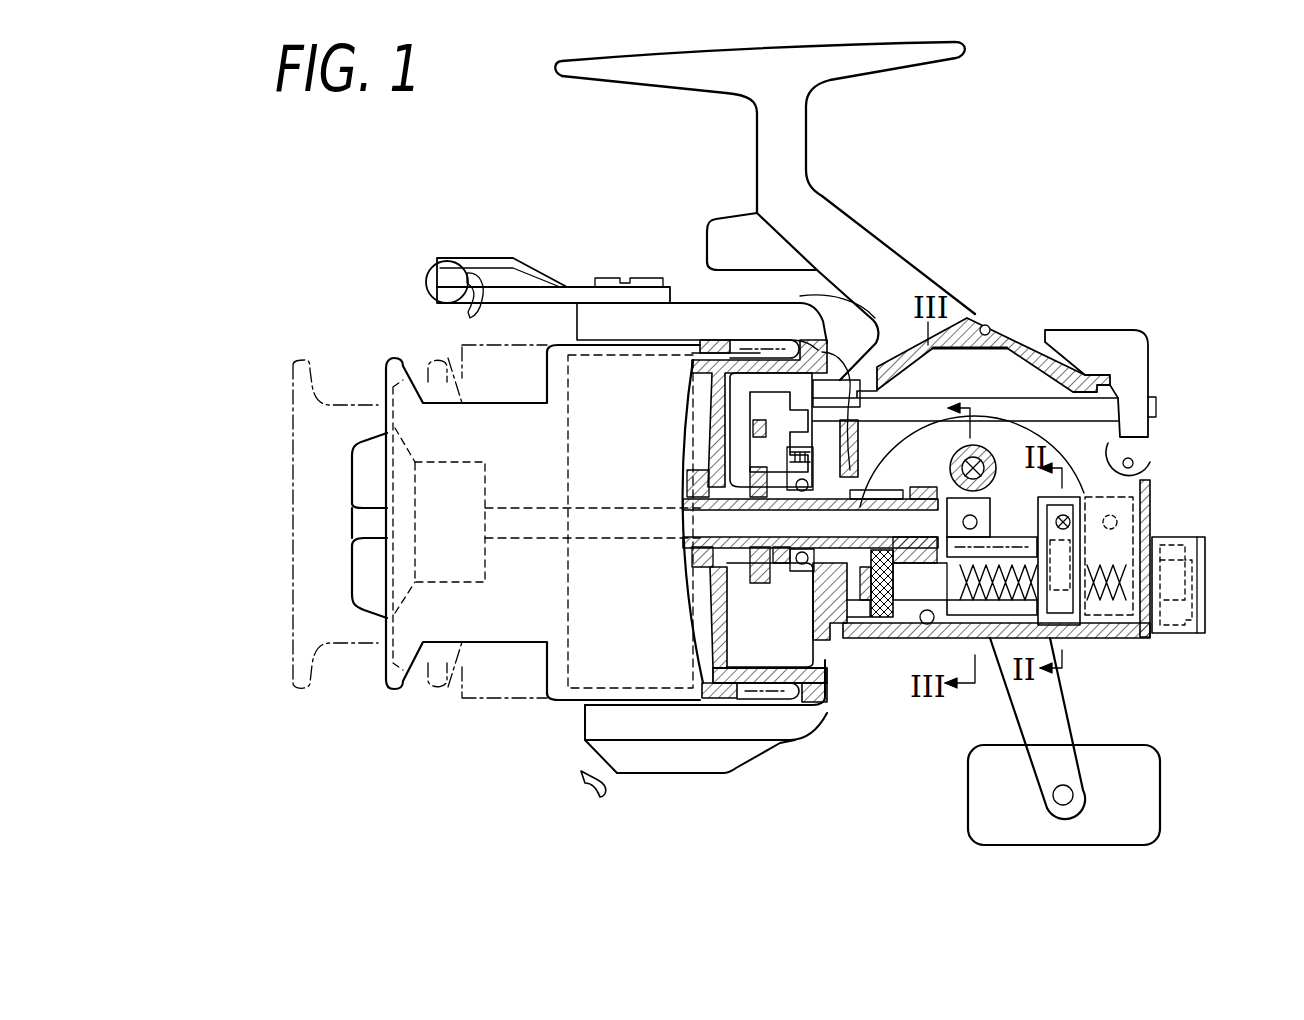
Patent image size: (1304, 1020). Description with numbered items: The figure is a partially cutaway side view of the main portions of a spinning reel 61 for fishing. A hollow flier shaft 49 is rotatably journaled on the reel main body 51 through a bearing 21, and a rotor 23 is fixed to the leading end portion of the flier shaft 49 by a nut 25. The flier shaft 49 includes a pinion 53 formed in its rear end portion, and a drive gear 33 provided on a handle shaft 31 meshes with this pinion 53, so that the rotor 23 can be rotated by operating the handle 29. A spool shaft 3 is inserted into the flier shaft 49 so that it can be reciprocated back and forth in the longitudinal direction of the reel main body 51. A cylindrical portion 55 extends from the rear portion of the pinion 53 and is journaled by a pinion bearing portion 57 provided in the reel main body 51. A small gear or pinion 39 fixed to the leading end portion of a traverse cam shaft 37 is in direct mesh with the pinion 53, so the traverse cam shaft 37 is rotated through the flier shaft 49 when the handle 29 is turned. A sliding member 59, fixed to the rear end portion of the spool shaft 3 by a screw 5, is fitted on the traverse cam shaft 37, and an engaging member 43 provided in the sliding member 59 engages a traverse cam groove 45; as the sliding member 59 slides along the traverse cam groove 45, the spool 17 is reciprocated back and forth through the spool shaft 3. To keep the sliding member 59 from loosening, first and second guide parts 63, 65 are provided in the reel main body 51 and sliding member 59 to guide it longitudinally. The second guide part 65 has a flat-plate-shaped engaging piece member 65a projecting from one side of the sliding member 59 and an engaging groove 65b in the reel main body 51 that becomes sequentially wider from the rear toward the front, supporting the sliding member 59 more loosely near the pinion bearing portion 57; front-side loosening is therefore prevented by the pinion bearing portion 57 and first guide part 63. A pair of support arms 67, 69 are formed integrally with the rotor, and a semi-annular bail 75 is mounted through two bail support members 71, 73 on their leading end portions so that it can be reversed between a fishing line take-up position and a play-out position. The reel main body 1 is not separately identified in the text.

The spinning reel body 1 is at (765, 211).
The spool shaft 3 is at (530, 520).
The screw 5 is at (1150, 512).
The spool 17 is at (420, 427).
The bearing 21 is at (787, 640).
The rotor 23 is at (723, 670).
The nut 25 is at (695, 480).
The handle 29 is at (1045, 805).
The handle shaft 31 is at (1000, 545).
The drive gear 33 is at (1070, 332).
The traverse cam shaft 37 is at (1160, 575).
The pinion 39 is at (875, 640).
The engaging member 43 is at (1115, 640).
The traverse cam groove 45 is at (1150, 636).
The flier shaft 49 is at (695, 545).
The reel main body 51 is at (970, 290).
The pinion 53 is at (840, 380).
The cylindrical portion 55 is at (990, 535).
The pinion bearing portion 57 is at (868, 663).
The sliding member 59 is at (1190, 545).
The spinning reel 61 is at (556, 245).
The first guide part 63 is at (1000, 640).
The second guide part 65 is at (1030, 420).
The engaging piece member 65a is at (1080, 645).
The engaging groove 65b is at (1065, 522).
The support arm 67 is at (640, 305).
The support arm 69 is at (592, 718).
The bail support member 71 is at (470, 262).
The bail support member 73 is at (596, 776).
The bail 75 is at (440, 280).